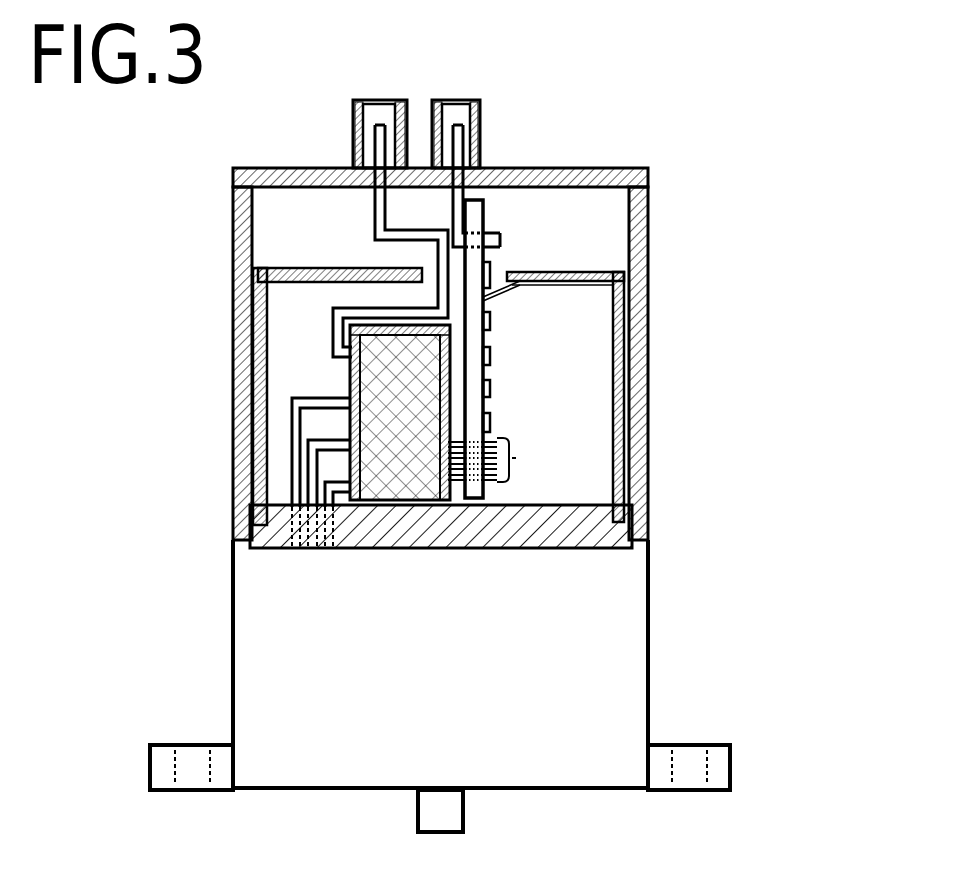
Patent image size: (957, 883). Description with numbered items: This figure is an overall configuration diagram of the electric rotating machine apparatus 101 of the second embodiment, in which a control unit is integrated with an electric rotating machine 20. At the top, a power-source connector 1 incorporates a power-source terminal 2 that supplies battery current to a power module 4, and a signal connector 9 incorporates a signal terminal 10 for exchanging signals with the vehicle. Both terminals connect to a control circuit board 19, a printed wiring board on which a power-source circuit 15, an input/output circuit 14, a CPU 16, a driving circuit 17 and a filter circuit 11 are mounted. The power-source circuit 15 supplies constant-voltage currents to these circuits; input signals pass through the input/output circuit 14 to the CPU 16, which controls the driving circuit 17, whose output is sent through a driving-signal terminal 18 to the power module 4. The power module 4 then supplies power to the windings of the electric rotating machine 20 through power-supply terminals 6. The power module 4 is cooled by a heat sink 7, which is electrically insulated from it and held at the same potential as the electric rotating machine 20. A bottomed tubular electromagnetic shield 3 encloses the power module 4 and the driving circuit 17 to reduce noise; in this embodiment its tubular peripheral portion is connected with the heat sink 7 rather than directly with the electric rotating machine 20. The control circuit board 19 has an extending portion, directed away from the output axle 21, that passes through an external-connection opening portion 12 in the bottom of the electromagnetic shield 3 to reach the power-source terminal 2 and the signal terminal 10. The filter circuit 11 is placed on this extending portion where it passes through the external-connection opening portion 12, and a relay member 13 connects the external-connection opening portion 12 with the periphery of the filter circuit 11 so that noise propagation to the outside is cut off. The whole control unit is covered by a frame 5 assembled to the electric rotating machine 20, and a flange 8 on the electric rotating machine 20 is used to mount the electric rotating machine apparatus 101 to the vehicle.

The power-source connector 1 is at (353, 137).
The power-source terminal 2 is at (375, 222).
The electromagnetic shield 3 is at (283, 268).
The power module 4 is at (373, 388).
The frame 5 is at (300, 458).
The power-supply terminals 6 is at (292, 492).
The heat sink 7 is at (262, 536).
The flange 8 is at (165, 745).
The signal connector 9 is at (477, 137).
The signal terminal 10 is at (503, 230).
The filter circuit 11 is at (498, 268).
The external-connection opening portion 12 is at (520, 282).
The relay member 13 is at (507, 290).
The input/output circuit 14 is at (490, 326).
The power-source circuit 15 is at (490, 356).
The CPU 16 is at (490, 390).
The driving circuit 17 is at (487, 418).
The driving-signal terminal 18 is at (520, 457).
The control circuit board 19 is at (477, 488).
The electric rotating machine 20 is at (622, 665).
The output axle 21 is at (440, 812).
The electric rotating machine apparatus 101 is at (714, 582).